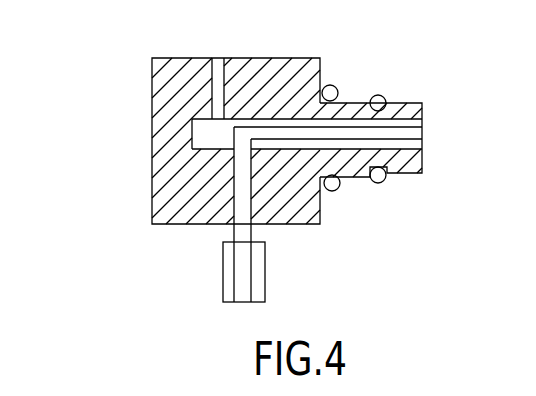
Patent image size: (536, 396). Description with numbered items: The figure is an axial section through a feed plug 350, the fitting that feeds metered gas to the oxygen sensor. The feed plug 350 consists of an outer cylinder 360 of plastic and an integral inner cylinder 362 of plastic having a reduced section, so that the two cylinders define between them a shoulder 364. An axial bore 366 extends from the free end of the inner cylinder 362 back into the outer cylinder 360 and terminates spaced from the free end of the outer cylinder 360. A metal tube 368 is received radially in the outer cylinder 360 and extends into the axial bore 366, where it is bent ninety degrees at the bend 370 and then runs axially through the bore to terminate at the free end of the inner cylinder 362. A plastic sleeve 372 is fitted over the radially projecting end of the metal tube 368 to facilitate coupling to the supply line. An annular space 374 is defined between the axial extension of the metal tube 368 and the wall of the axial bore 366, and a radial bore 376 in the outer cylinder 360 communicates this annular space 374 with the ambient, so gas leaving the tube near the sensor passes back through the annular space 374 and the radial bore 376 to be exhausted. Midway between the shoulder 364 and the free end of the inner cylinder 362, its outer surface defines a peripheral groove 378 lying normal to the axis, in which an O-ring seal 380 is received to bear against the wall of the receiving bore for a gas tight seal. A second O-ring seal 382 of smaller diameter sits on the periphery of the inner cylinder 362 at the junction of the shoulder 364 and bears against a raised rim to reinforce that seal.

The feed plug 350 is at (122, 103).
The outer cylinder 360 is at (278, 57).
The inner cylinder 362 is at (413, 103).
The shoulder 364 is at (323, 220).
The axial bore 366 is at (423, 146).
The metal tube 368 is at (236, 227).
The bend 370 is at (233, 130).
The plastic sleeve 372 is at (224, 272).
The annular space 374 is at (349, 124).
The radial bore 376 is at (220, 57).
The peripheral groove 378 is at (385, 99).
The O-ring seal 380 is at (385, 183).
The second O-ring seal 382 is at (339, 91).